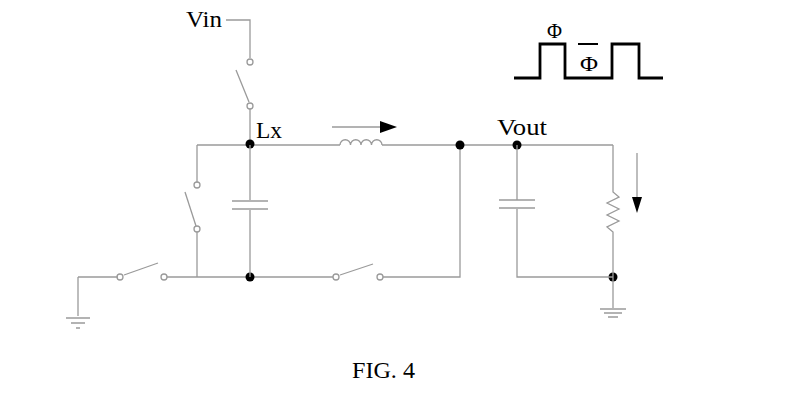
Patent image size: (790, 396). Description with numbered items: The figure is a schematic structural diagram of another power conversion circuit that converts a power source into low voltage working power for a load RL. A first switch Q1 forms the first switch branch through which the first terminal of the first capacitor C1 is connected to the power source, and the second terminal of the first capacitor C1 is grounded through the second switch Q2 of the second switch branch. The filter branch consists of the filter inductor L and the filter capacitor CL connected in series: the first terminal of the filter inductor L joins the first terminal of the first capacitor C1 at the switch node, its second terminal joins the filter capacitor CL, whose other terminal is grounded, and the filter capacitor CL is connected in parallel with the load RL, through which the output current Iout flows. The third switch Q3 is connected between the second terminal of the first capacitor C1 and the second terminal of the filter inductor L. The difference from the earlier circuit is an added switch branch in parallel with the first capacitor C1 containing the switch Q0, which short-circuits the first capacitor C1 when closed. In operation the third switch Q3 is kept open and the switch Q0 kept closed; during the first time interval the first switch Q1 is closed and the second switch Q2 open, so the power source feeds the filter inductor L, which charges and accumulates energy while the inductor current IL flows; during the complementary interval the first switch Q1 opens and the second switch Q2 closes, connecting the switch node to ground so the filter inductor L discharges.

The first switch Q1 is at (230, 84).
The switch Q0 is at (176, 207).
The second switch Q2 is at (142, 289).
The third switch Q3 is at (358, 290).
The first capacitor C1 is at (264, 211).
The filter inductor L is at (361, 158).
The inductor current IL is at (364, 116).
The filter capacitor CL is at (556, 211).
The load RL is at (601, 231).
The output current Iout is at (656, 183).